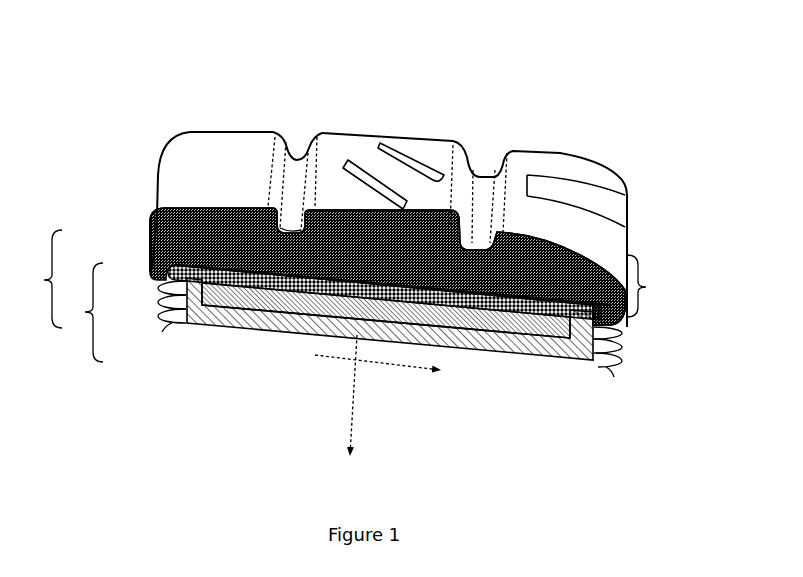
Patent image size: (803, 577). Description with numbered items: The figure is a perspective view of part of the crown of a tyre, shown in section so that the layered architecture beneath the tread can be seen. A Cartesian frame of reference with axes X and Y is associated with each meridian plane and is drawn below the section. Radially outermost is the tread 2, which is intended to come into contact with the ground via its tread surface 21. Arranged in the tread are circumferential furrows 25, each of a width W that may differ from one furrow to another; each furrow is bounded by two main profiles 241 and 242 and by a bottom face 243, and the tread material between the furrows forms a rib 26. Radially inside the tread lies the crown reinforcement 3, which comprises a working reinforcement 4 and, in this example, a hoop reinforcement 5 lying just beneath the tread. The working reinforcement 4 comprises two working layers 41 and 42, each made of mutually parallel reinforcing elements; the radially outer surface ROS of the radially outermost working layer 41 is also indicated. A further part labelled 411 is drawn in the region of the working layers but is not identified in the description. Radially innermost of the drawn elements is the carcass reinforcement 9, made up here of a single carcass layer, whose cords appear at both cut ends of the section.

The tread 2 is at (410, 266).
The radially outer surface ROS is at (508, 318).
The crown reinforcement 3 is at (41, 279).
The working reinforcement 4 is at (84, 312).
The hoop reinforcement 5 is at (230, 272).
The carcass reinforcement 9 is at (620, 366).
The tread surface 21 is at (368, 147).
The circumferential furrow 25 is at (298, 156).
The rib 26 is at (220, 157).
The working layer 41 is at (202, 286).
The working layer 42 is at (182, 318).
The main profile 241 is at (283, 142).
The main profile 242 is at (305, 201).
The bottom face 243 is at (300, 176).
The tray 411 is at (267, 303).
The furrow width W is at (503, 163).
The X axis X is at (359, 399).
The Y axis Y is at (377, 378).